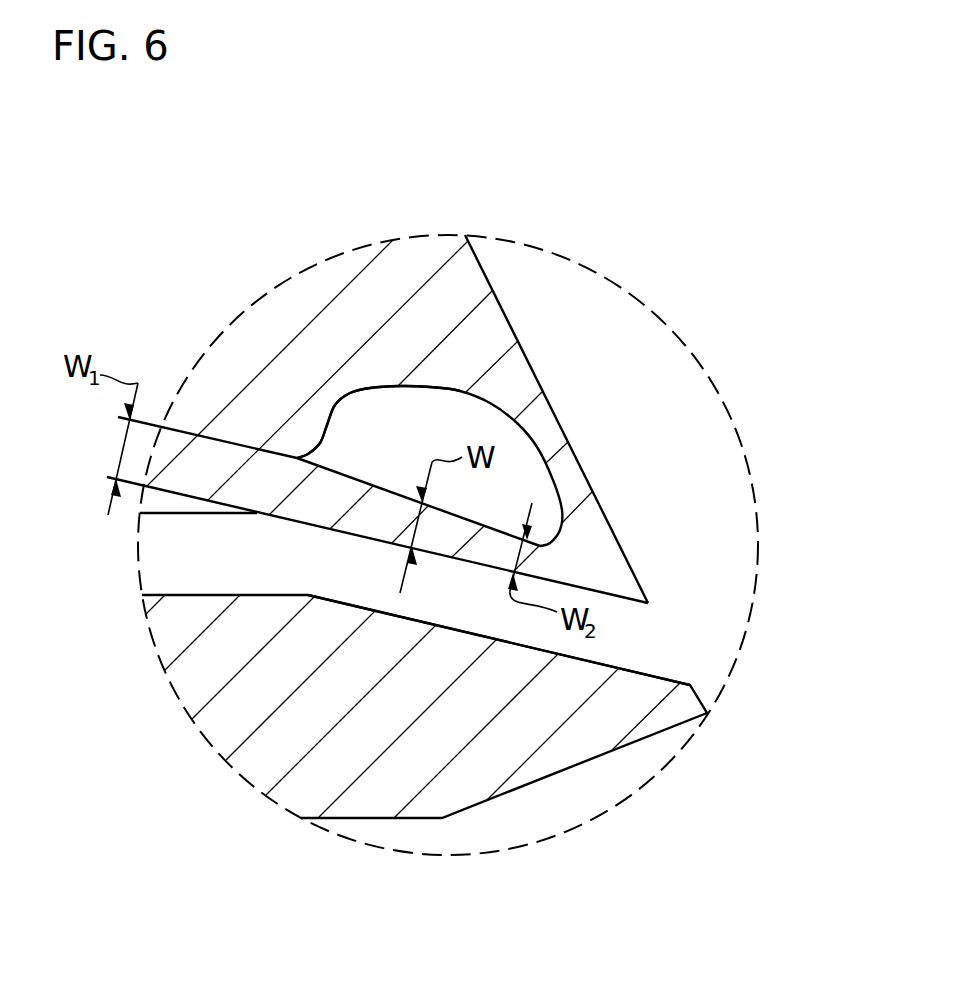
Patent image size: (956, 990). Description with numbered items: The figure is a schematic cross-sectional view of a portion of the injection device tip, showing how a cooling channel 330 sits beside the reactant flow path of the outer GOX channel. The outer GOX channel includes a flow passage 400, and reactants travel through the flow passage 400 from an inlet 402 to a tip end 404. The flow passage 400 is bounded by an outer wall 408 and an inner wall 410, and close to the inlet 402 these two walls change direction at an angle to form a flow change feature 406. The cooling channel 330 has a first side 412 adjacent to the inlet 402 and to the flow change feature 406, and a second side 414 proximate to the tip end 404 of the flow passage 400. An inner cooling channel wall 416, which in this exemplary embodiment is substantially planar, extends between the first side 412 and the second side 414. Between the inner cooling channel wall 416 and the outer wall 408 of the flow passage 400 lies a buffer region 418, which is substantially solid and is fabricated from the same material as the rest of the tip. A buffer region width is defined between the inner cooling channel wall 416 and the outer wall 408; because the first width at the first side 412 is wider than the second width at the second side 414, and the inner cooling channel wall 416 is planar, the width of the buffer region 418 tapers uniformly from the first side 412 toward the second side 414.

The cooling channel 330 is at (457, 436).
The flow passage 400 is at (234, 576).
The inlet 402 is at (124, 564).
The tip end 404 is at (696, 637).
The flow change feature 406 is at (260, 512).
The outer wall 408 is at (435, 553).
The inner wall 410 is at (458, 630).
The first side 412 is at (302, 456).
The second side 414 is at (555, 510).
The inner cooling channel wall 416 is at (383, 488).
The buffer region 418 is at (374, 522).